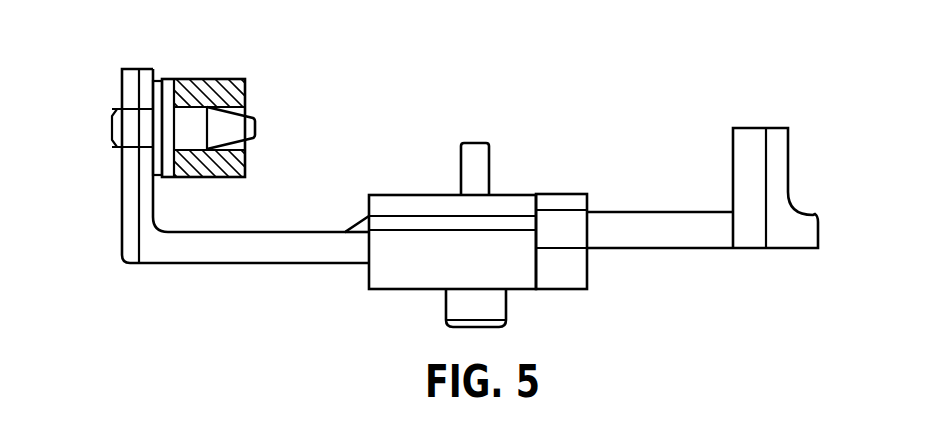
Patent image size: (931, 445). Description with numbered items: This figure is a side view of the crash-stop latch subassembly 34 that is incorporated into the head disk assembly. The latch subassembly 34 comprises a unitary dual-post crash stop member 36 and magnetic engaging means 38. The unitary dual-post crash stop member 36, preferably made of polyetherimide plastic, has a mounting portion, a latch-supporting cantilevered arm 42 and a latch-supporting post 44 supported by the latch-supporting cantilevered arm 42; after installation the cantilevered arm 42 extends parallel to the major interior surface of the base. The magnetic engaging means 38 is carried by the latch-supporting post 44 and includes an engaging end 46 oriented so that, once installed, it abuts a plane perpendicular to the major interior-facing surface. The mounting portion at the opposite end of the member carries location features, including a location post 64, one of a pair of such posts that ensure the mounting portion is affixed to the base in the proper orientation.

The latch subassembly 34 is at (663, 97).
The unitary dual-post crash stop member 36 is at (656, 233).
The magnetic engaging means 38 is at (190, 78).
The latch-supporting cantilevered arm 42 is at (188, 247).
The latch-supporting post 44 is at (130, 208).
The engaging end 46 is at (257, 125).
The location post 64 is at (506, 324).